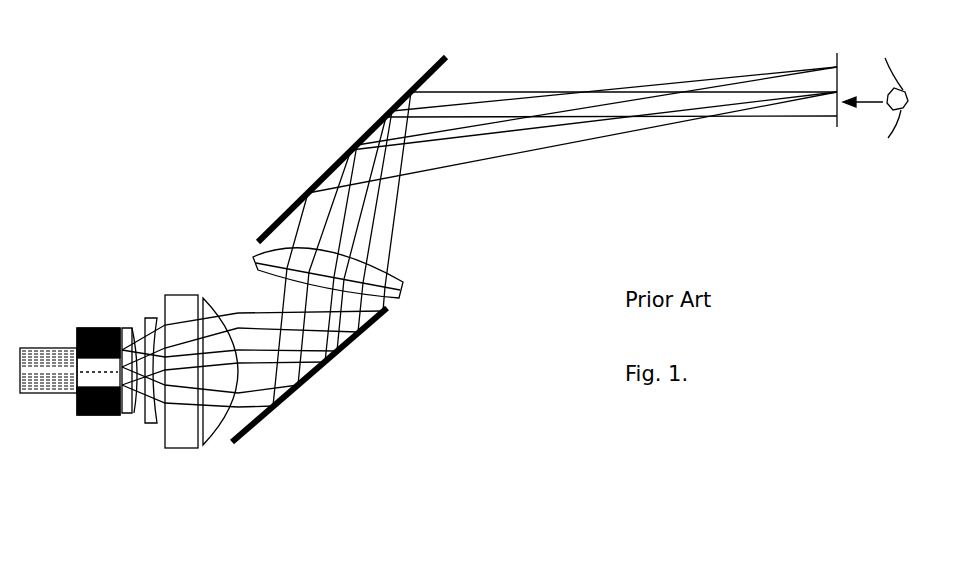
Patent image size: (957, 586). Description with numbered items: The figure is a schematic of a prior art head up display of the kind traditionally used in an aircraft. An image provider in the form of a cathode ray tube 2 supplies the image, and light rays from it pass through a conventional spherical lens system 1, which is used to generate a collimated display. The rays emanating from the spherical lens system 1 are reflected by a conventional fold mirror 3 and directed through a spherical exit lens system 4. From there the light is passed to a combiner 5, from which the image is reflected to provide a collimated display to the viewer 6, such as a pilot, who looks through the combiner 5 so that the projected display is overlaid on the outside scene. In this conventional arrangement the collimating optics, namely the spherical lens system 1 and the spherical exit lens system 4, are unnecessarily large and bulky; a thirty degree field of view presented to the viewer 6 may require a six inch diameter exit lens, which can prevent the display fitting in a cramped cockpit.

The spherical lens system 1 is at (202, 490).
The cathode ray tube 2 is at (38, 367).
The fold mirror 3 is at (308, 380).
The spherical exit lens system 4 is at (432, 270).
The combiner 5 is at (373, 126).
The viewer 6 is at (903, 112).